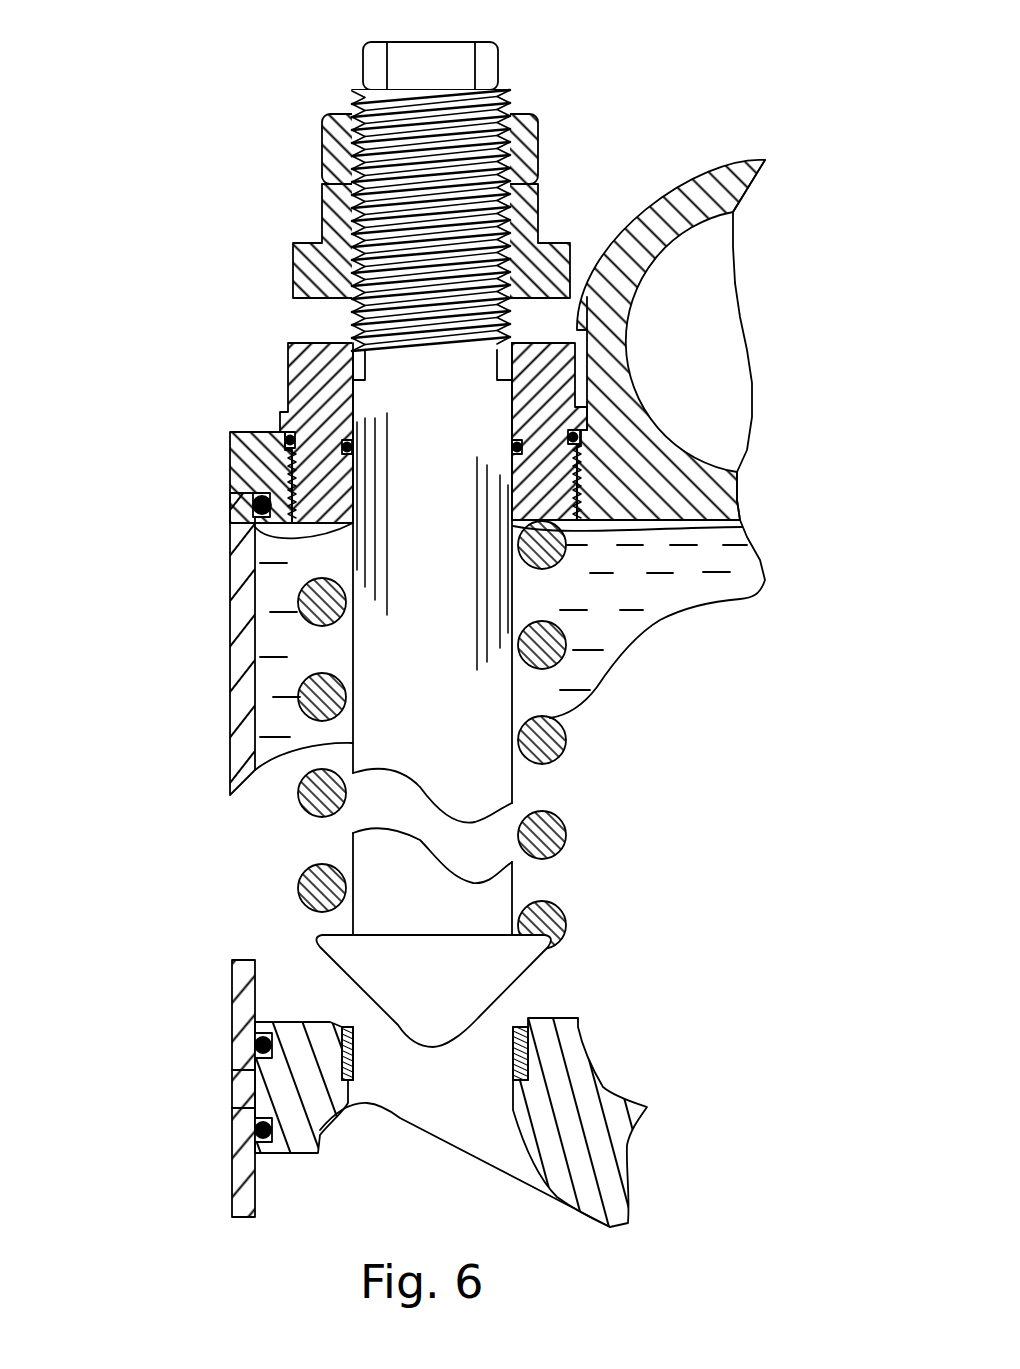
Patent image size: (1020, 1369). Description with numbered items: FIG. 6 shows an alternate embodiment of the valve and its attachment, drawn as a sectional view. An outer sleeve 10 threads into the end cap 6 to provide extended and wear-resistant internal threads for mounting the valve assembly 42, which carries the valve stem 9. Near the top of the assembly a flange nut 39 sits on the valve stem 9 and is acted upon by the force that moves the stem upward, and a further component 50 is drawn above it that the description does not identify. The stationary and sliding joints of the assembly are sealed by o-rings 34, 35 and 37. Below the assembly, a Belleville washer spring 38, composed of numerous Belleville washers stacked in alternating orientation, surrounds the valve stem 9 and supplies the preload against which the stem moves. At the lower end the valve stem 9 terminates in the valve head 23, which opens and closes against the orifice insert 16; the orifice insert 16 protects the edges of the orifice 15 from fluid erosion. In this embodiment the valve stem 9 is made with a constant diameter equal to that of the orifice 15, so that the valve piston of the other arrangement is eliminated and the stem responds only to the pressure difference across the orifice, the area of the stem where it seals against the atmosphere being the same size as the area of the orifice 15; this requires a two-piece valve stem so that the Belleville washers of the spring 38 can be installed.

The end cap 6 is at (733, 160).
The lock nut 50 is at (337, 128).
The flange nut 39 is at (337, 233).
The valve assembly 42 is at (280, 393).
The o-ring 34 is at (237, 498).
The o-ring 37 is at (255, 537).
The o-ring 35 is at (573, 440).
The outer sleeve 10 is at (573, 492).
The valve stem 9 is at (497, 675).
The Belleville washer spring 38 is at (557, 763).
The orifice 15 is at (500, 1018).
The valve head 23 is at (385, 1000).
The orifice insert 16 is at (527, 1057).